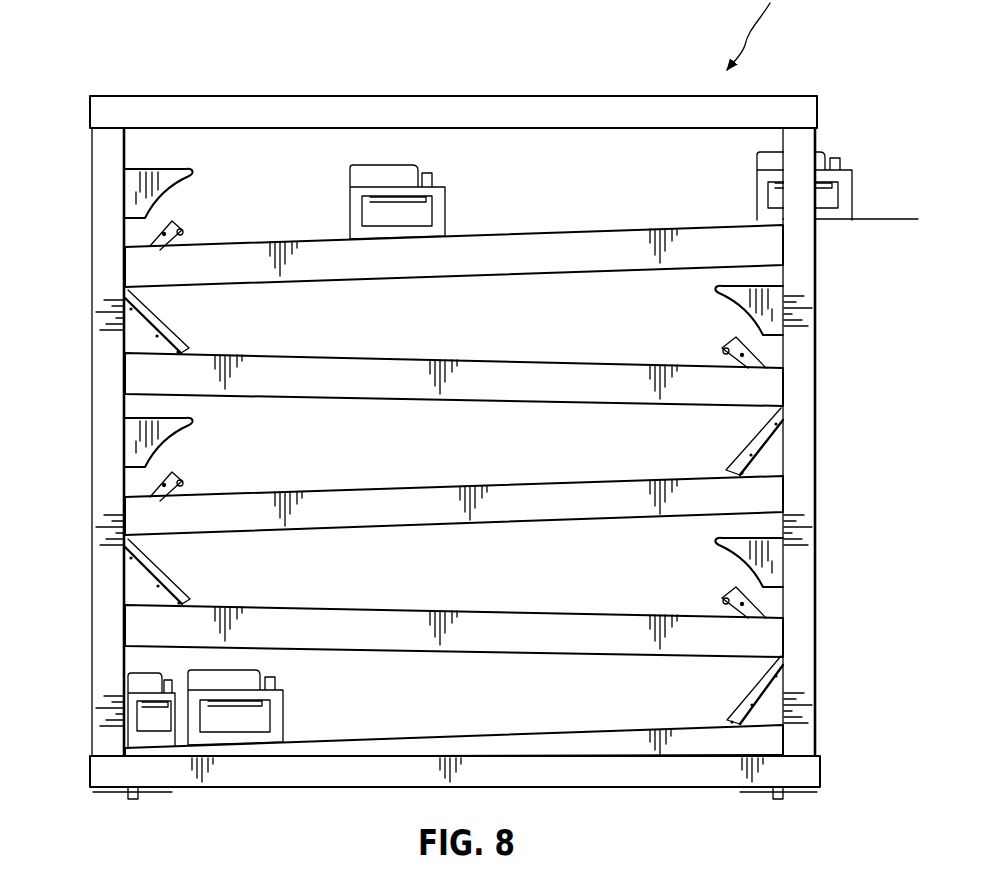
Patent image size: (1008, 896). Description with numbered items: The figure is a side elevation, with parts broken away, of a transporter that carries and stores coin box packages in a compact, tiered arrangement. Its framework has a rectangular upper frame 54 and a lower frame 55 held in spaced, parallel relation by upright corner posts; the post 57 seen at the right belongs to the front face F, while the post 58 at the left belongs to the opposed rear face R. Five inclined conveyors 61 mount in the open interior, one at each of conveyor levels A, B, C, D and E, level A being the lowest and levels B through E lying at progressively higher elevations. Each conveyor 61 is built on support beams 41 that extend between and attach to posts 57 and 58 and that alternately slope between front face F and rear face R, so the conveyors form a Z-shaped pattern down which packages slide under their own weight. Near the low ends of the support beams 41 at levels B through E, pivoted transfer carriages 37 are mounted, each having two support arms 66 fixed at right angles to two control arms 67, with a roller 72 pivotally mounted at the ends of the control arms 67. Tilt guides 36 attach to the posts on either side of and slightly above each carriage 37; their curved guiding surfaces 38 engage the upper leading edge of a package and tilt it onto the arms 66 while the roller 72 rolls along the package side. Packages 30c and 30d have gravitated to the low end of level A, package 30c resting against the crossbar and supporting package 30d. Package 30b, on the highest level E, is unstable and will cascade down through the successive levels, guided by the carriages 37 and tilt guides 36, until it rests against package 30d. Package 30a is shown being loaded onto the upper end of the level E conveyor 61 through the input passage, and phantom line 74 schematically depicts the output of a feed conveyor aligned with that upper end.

The coin box package 30a is at (850, 172).
The coin box package 30b is at (397, 202).
The coin box package 30c is at (151, 710).
The coin box package 30d is at (235, 707).
The tilt guide 36 is at (132, 188).
The transfer carriage 37 is at (148, 323).
The curved guiding surface 38 is at (196, 178).
The support beam 41 is at (312, 249).
The upper frame 54 is at (512, 103).
The lower frame 55 is at (622, 781).
The corner post 57 is at (805, 471).
The corner post 58 is at (97, 284).
The inclined conveyor 61 is at (711, 259).
The support arm 66 is at (148, 576).
The control arm 67 is at (722, 350).
The roller 72 is at (184, 230).
The phantom line 74 is at (868, 222).
The conveyor level A is at (430, 727).
The conveyor level B is at (432, 603).
The conveyor level C is at (427, 484).
The conveyor level D is at (428, 346).
The conveyor level E is at (530, 224).
The front face F is at (823, 298).
The rear face R is at (88, 343).